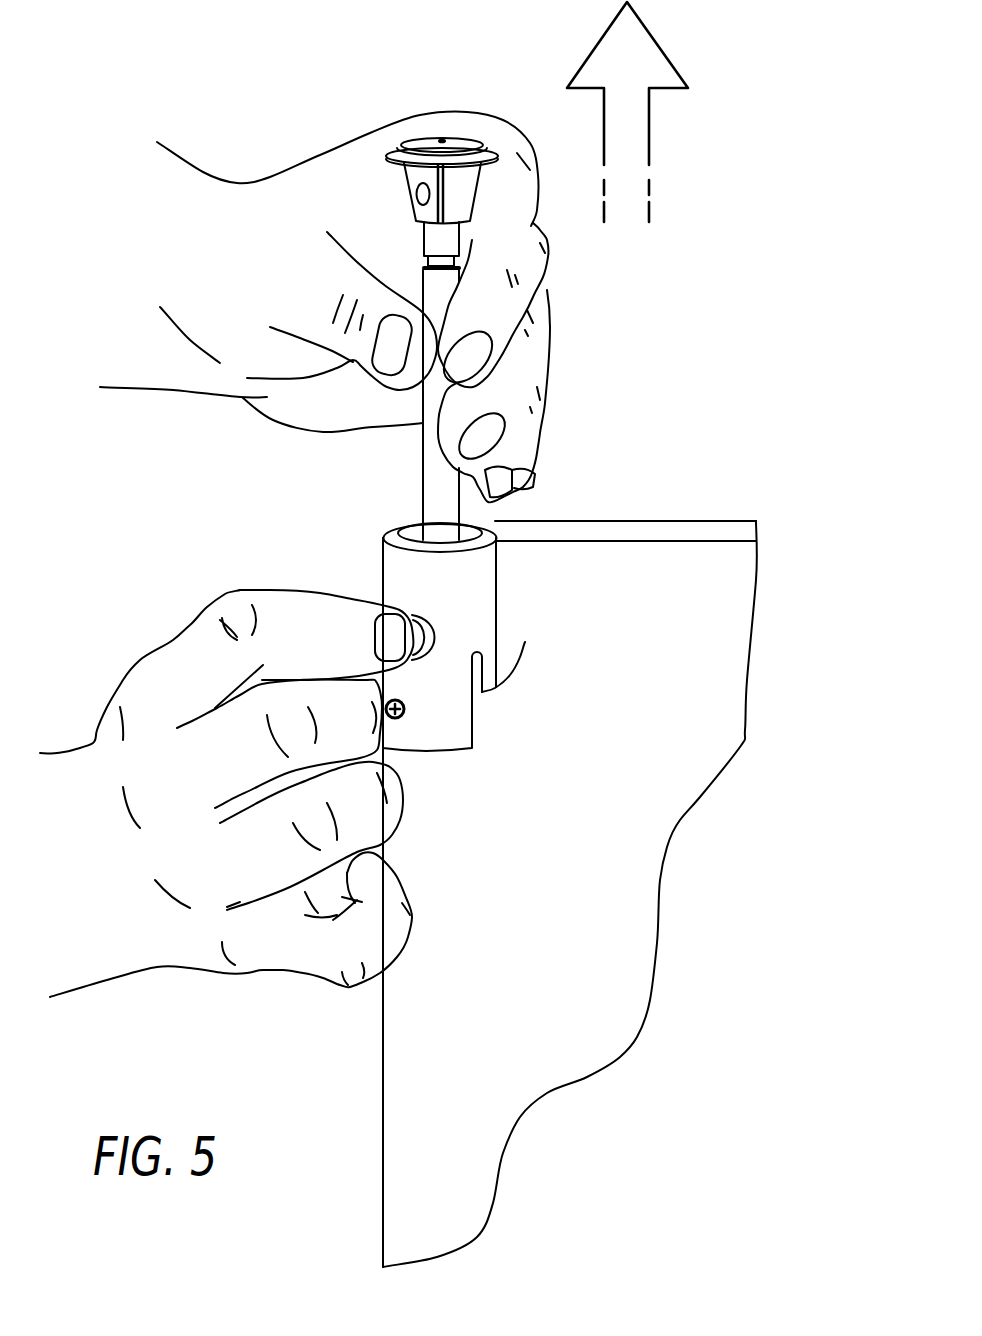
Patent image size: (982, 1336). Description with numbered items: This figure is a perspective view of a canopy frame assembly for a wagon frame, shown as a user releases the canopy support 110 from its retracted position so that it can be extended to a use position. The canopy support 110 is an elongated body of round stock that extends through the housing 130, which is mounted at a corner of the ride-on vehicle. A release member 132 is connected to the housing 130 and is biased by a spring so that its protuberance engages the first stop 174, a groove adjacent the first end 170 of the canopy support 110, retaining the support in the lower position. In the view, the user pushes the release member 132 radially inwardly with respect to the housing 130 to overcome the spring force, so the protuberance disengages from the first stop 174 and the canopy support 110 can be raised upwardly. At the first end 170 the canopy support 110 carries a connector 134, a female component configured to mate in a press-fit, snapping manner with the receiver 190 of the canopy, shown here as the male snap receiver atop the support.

The canopy support 110 is at (440, 477).
The housing 130 is at (403, 575).
The release member 132 is at (430, 628).
The connector 134 is at (391, 148).
The first end 170 is at (440, 237).
The first stop 174 is at (440, 263).
The receiver 190 is at (457, 140).